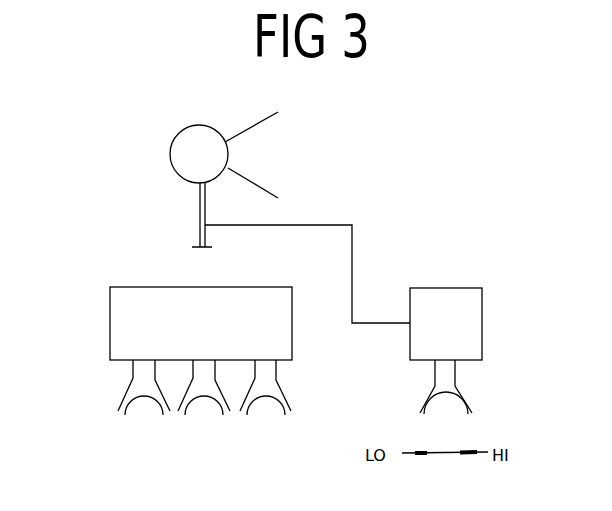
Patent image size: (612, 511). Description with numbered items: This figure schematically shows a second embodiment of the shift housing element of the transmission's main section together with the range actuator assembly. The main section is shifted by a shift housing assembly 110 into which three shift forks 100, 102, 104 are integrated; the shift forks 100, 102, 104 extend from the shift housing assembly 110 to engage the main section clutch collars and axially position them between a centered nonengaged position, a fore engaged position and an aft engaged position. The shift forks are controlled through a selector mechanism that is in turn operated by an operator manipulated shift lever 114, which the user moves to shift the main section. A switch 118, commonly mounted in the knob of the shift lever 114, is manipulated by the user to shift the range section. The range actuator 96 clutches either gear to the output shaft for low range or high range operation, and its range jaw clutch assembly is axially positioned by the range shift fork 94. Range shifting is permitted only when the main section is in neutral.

The switch 118 is at (250, 126).
The shift lever 114 is at (200, 215).
The shift housing assembly 110 is at (140, 322).
The shift fork 100 is at (123, 377).
The shift fork 102 is at (238, 414).
The shift fork 104 is at (280, 373).
The range actuator 96 is at (445, 288).
The range shift fork 94 is at (457, 373).